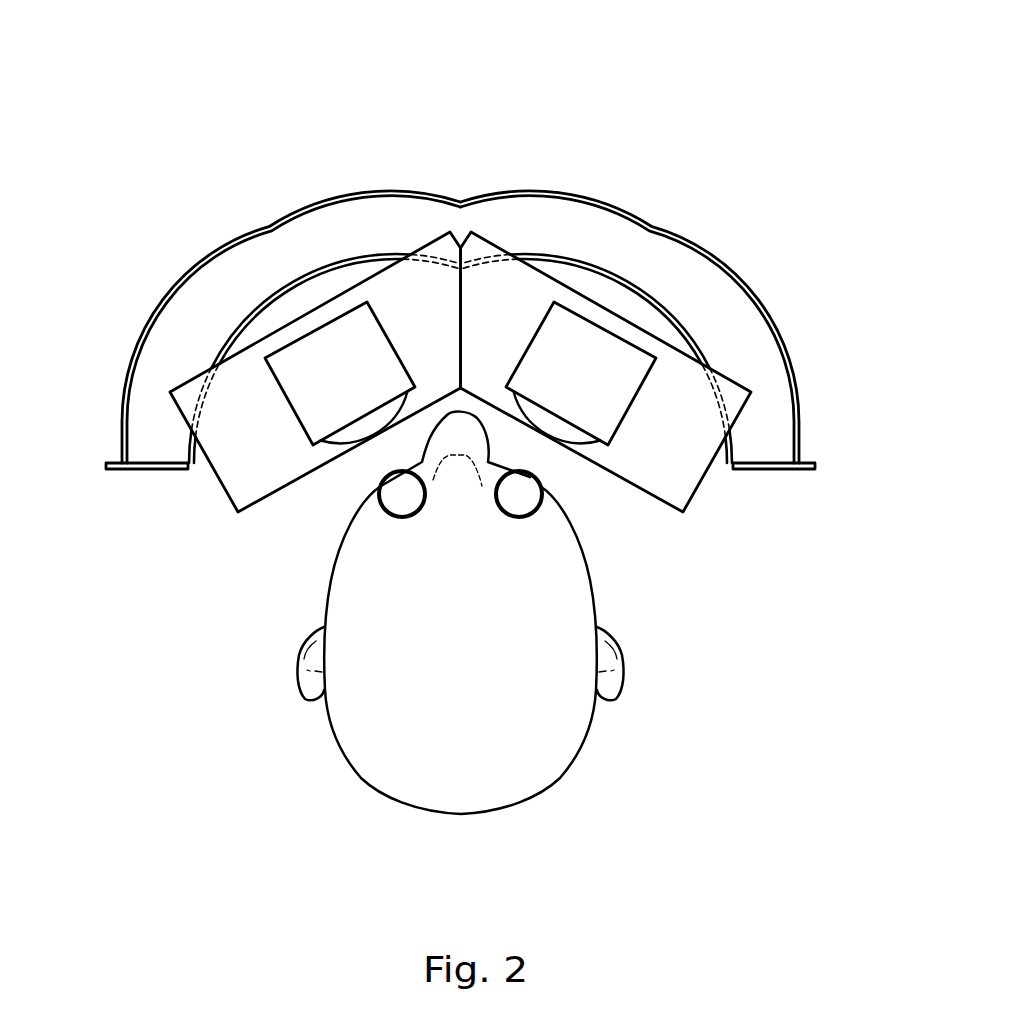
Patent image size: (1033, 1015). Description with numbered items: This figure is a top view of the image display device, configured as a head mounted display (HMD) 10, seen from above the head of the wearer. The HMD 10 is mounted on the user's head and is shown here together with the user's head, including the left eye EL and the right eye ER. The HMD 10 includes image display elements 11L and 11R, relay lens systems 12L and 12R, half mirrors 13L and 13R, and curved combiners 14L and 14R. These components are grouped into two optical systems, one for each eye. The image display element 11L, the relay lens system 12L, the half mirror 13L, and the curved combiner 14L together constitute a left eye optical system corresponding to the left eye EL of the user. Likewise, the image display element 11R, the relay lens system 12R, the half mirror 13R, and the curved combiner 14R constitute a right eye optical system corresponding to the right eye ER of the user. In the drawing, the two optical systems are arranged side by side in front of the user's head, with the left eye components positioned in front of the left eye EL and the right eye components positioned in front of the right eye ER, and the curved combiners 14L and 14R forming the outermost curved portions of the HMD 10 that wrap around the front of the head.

The head mounted display (HMD) 10 is at (679, 77).
The image display element 11L is at (353, 318).
The image display element 11R is at (568, 318).
The relay lens system 12L is at (348, 442).
The relay lens system 12R is at (573, 442).
The half mirror 13L is at (243, 353).
The half mirror 13R is at (678, 353).
The curved combiner 14L is at (232, 247).
The curved combiner 14R is at (689, 247).
The left eye EL is at (395, 517).
The right eye ER is at (527, 517).